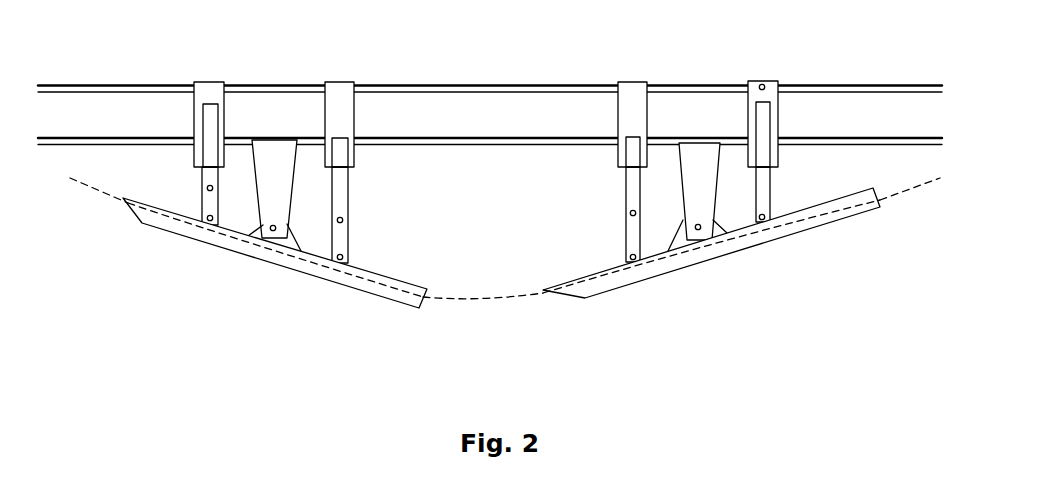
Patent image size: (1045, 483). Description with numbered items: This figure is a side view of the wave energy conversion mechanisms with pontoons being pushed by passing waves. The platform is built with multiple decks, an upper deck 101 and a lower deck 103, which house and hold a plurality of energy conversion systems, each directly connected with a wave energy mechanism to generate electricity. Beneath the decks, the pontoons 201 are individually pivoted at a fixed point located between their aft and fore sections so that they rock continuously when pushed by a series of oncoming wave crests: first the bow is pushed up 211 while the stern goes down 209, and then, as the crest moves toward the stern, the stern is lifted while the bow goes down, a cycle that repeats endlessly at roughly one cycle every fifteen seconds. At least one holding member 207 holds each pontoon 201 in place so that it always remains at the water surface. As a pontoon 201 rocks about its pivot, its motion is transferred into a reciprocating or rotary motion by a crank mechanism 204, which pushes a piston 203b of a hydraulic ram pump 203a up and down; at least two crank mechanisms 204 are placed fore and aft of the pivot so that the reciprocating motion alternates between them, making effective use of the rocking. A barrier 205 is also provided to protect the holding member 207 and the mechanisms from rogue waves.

The upper deck 101 is at (843, 88).
The lower deck 103 is at (808, 142).
The pontoon 201 is at (204, 247).
The hydraulic ram pump 203a is at (358, 160).
The piston 203b is at (340, 191).
The crank mechanism 204 is at (627, 230).
The barrier 205 is at (385, 238).
The holding member 207 is at (697, 157).
The stern going down 209 is at (477, 299).
The bow pushed up 211 is at (75, 186).